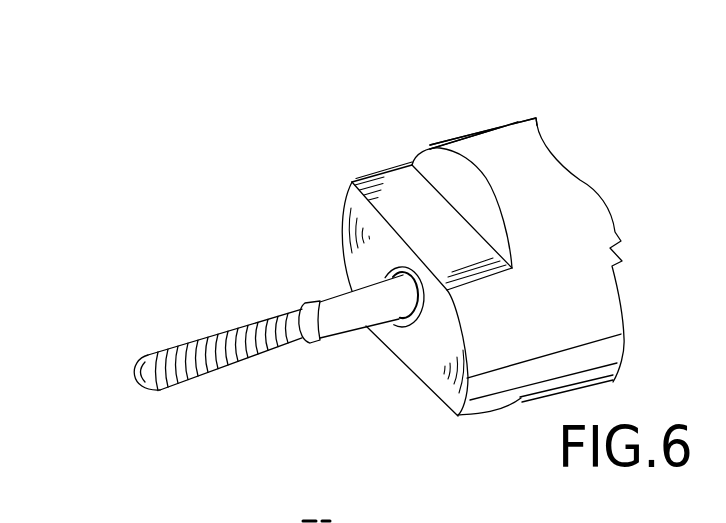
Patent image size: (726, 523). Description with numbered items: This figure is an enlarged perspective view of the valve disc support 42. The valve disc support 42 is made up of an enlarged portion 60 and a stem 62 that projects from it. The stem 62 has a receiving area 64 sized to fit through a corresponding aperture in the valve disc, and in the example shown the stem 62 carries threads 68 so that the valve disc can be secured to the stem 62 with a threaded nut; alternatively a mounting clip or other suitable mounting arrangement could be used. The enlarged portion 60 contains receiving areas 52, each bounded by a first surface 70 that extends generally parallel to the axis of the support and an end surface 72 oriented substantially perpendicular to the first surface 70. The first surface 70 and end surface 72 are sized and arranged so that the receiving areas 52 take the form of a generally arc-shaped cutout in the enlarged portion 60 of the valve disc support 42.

The valve disc support 42 is at (512, 147).
The receiving areas 52 is at (405, 203).
The enlarged portion 60 is at (519, 120).
The stem 62 is at (292, 318).
The receiving area 64 is at (338, 310).
The threads 68 is at (205, 341).
The first surface 70 is at (375, 186).
The end surface 72 is at (453, 180).